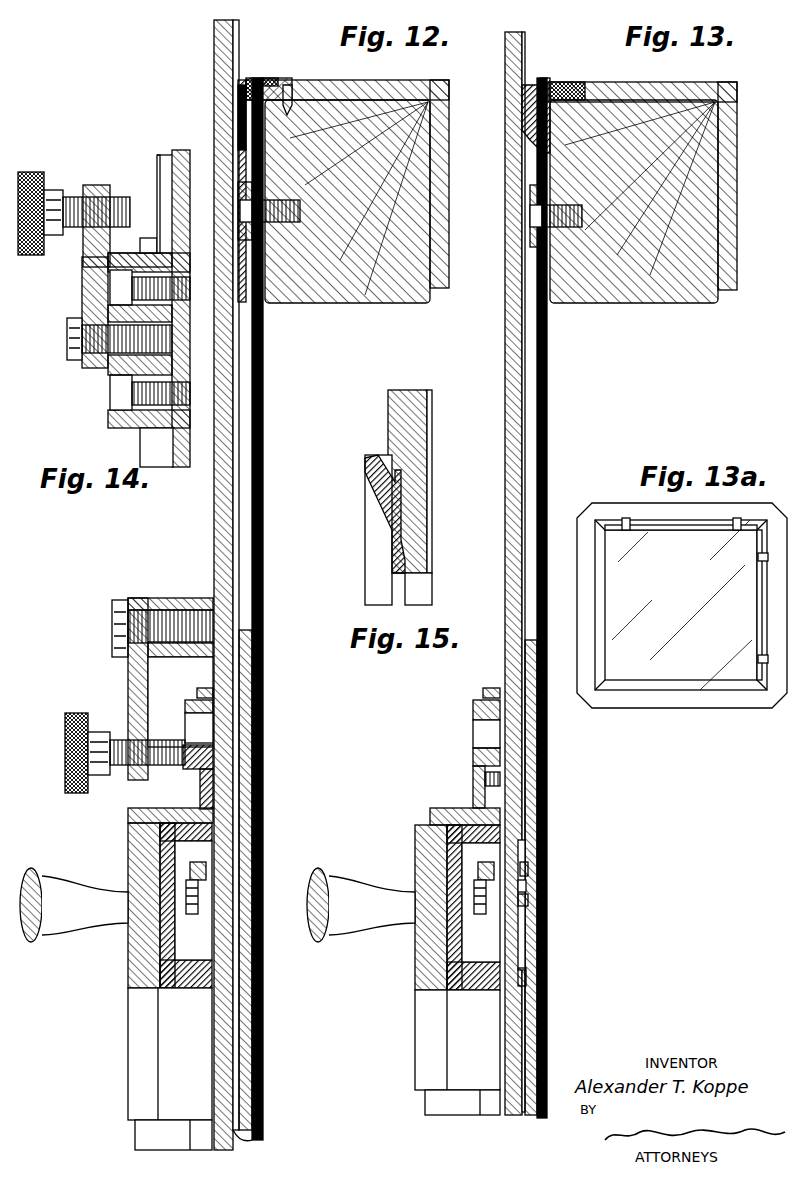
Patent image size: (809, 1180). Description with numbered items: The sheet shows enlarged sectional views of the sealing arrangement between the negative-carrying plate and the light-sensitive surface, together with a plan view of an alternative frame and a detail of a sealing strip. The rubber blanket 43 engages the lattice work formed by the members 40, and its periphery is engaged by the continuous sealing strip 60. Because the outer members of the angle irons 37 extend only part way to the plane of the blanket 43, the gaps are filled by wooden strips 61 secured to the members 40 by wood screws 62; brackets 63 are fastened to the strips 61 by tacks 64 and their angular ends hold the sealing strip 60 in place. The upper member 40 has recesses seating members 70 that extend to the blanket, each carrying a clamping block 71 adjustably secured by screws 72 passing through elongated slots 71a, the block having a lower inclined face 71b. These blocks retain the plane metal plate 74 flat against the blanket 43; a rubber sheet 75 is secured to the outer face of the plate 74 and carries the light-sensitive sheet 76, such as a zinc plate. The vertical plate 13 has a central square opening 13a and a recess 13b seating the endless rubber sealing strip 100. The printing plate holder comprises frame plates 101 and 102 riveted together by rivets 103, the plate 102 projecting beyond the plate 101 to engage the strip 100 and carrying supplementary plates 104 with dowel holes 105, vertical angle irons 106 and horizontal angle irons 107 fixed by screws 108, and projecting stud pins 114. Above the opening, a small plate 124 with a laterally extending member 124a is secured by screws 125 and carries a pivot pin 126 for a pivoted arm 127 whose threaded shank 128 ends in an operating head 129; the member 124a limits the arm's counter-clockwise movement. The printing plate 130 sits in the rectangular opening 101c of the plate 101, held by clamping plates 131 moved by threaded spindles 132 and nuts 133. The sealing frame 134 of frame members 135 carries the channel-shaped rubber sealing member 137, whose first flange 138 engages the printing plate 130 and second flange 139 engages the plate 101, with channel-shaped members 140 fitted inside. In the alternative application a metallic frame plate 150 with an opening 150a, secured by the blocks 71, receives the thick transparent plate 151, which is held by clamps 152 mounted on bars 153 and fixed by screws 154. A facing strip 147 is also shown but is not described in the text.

In FIG. 12, the vertical plate 13 is at (214, 517).
In FIG. 15, the vertical plate 13 is at (400, 392).
In FIG. 13, the vertical plate 13 is at (505, 62).
In FIG. 12, the square opening 13a is at (250, 782).
In FIG. 15, the square opening 13a is at (430, 580).
In FIG. 12, the recess 13b is at (246, 747).
In FIG. 15, the recess 13b is at (405, 512).
In FIG. 13, the recess 13b is at (512, 784).
In FIG. 12, the angle iron 37 is at (449, 202).
In FIG. 13, the angle iron 37 is at (737, 160).
In FIG. 12, the member 40 is at (416, 153).
In FIG. 13, the member 40 is at (705, 212).
In FIG. 12, the rubber blanket 43 is at (263, 462).
In FIG. 13, the rubber blanket 43 is at (548, 386).
In FIG. 12, the sealing strip 60 is at (238, 92).
In FIG. 13, the sealing strip 60 is at (530, 88).
In FIG. 12, the strip 61 is at (240, 118).
In FIG. 13, the strip 61 is at (586, 92).
In FIG. 12, the wood screw 62 is at (292, 95).
In FIG. 12, the bracket 63 is at (254, 78).
In FIG. 13, the bracket 63 is at (552, 84).
In FIG. 12, the tack 64 is at (270, 78).
In FIG. 12, the member 70 is at (325, 300).
In FIG. 13, the member 70 is at (577, 242).
In FIG. 12, the clamping block 71 is at (244, 190).
In FIG. 13, the clamping block 71 is at (540, 198).
In FIG. 12, the elongated slot 71a is at (216, 178).
In FIG. 12, the inclined face 71b is at (266, 296).
In FIG. 13, the inclined face 71b is at (540, 272).
In FIG. 12, the screw 72 is at (248, 211).
In FIG. 13, the screw 72 is at (536, 218).
In FIG. 12, the plane plate 74 is at (246, 1012).
In FIG. 12, the rubber sheet 75 is at (252, 1136).
In FIG. 12, the light-sensitive sheet 76 is at (236, 1148).
In FIG. 12, the rubber sealing strip 100 is at (196, 775).
In FIG. 15, the rubber sealing strip 100 is at (378, 453).
In FIG. 12, the frame plate 101 is at (256, 818).
In FIG. 12, the rectangular opening 101c is at (232, 938).
In FIG. 12, the frame plate 102 is at (215, 706).
In FIG. 14, the frame plate 102 is at (157, 156).
In FIG. 13, the frame plate 102 is at (474, 708).
In FIG. 12, the rivet 103 is at (256, 800).
In FIG. 12, the supplementary plate 104 is at (186, 705).
In FIG. 14, the supplementary plate 104 is at (145, 246).
In FIG. 13, the supplementary plate 104 is at (474, 760).
In FIG. 12, the dowel hole 105 is at (186, 722).
In FIG. 13, the dowel hole 105 is at (480, 726).
In FIG. 12, the vertical angle iron 106 is at (146, 1141).
In FIG. 13, the vertical angle iron 106 is at (436, 1115).
In FIG. 12, the horizontal angle iron 107 is at (130, 820).
In FIG. 13, the horizontal angle iron 107 is at (436, 812).
In FIG. 13, the screw 108 is at (486, 795).
In FIG. 12, the stud pin 114 is at (200, 690).
In FIG. 13, the stud pin 114 is at (494, 690).
In FIG. 12, the plate 124 is at (182, 600).
In FIG. 14, the plate 124 is at (110, 422).
In FIG. 12, the laterally extending member 124a is at (148, 672).
In FIG. 14, the laterally extending member 124a is at (84, 312).
In FIG. 14, the screw 125 is at (116, 286).
In FIG. 12, the pivot pin 126 is at (115, 625).
In FIG. 14, the pivot pin 126 is at (75, 340).
In FIG. 12, the pivoted arm 127 is at (136, 700).
In FIG. 14, the pivoted arm 127 is at (90, 277).
In FIG. 12, the shank 128 is at (120, 768).
In FIG. 14, the shank 128 is at (118, 210).
In FIG. 12, the operating head 129 is at (65, 752).
In FIG. 14, the operating head 129 is at (30, 172).
In FIG. 12, the printing plate 130 is at (216, 1060).
In FIG. 13, the printing plate 130 is at (509, 1125).
In FIG. 12, the clamping plate 131 is at (248, 960).
In FIG. 13, the clamping plate 131 is at (530, 976).
In FIG. 12, the threaded spindle 132 is at (206, 882).
In FIG. 13, the threaded spindle 132 is at (477, 992).
In FIG. 12, the nut 133 is at (188, 900).
In FIG. 13, the nut 133 is at (522, 912).
In FIG. 12, the sealing frame 134 is at (124, 999).
In FIG. 13, the sealing frame 134 is at (411, 1009).
In FIG. 12, the frame member 135 is at (142, 932).
In FIG. 13, the frame member 135 is at (430, 948).
In FIG. 12, the rubber sealing member 137 is at (160, 868).
In FIG. 13, the rubber sealing member 137 is at (450, 900).
In FIG. 12, the first lateral flange 138 is at (186, 990).
In FIG. 12, the second lateral flange 139 is at (212, 835).
In FIG. 13, the second lateral flange 139 is at (450, 838).
In FIG. 12, the channel-shaped member 140 is at (165, 950).
In FIG. 13, the channel-shaped member 140 is at (450, 962).
In FIG. 12, the facing strip 147 is at (214, 42).
In FIG. 15, the facing strip 147 is at (432, 447).
In FIG. 13, the facing strip 147 is at (525, 48).
In FIG. 13, the frame plate 150 is at (530, 762).
In FIG. 13A, the frame plate 150 is at (708, 692).
In FIG. 13, the rectangular opening 150a is at (522, 842).
In FIG. 13A, the rectangular opening 150a is at (606, 580).
In FIG. 13, the transparent plate 151 is at (530, 1020).
In FIG. 13, the clamp 152 is at (530, 900).
In FIG. 13A, the clamp 152 is at (626, 530).
In FIG. 13, the bar 153 is at (528, 886).
In FIG. 13A, the bar 153 is at (684, 528).
In FIG. 13, the screw 154 is at (530, 868).